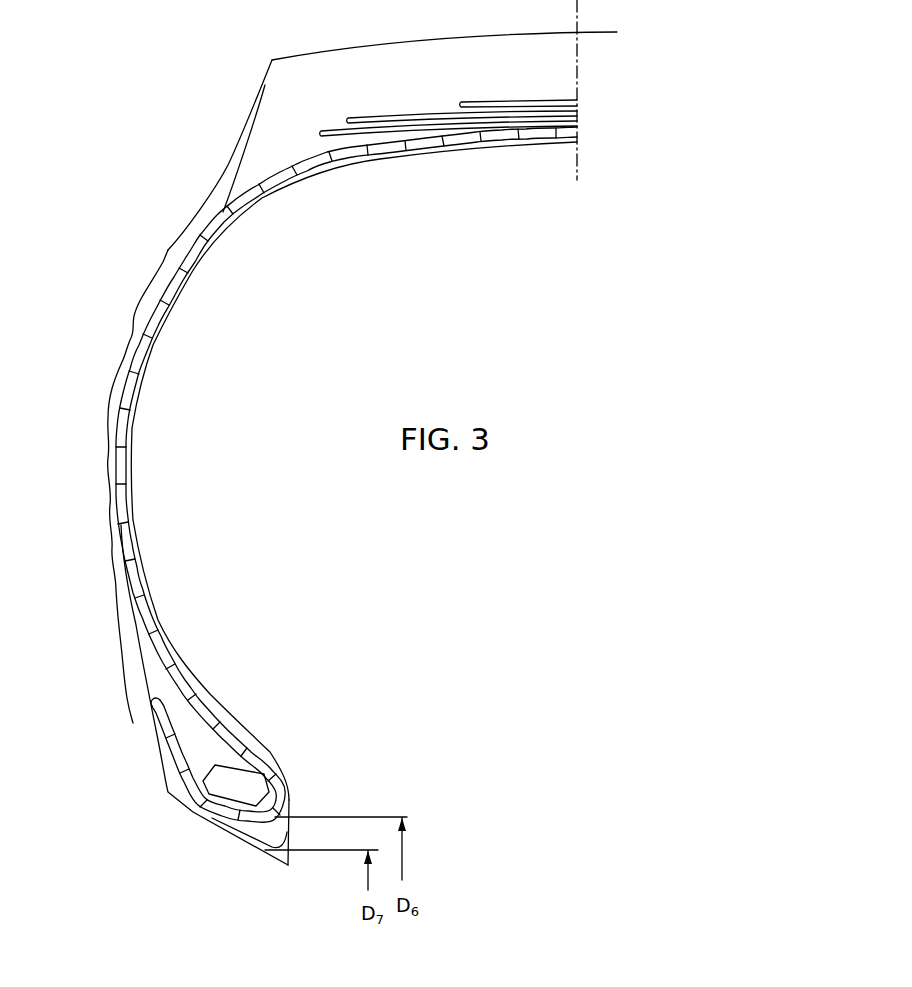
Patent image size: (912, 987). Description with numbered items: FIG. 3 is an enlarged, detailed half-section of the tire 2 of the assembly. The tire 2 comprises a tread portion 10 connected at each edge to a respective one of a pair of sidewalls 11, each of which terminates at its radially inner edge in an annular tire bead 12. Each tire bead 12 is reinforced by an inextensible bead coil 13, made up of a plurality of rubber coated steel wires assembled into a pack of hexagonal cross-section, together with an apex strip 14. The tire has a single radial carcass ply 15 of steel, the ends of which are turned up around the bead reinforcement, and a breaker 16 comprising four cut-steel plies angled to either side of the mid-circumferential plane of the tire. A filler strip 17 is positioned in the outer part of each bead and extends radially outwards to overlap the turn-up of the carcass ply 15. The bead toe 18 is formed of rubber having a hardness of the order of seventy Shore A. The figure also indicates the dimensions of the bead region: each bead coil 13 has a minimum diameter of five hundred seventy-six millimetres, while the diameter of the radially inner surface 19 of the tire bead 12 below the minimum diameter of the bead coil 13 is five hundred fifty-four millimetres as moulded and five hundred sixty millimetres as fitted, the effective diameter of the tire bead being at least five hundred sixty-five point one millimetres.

The tread portion 10 is at (362, 75).
The tire 2 is at (222, 165).
The breaker 16 is at (465, 100).
The radial carcass ply 15 is at (178, 279).
The filler strip 17 is at (155, 718).
The sidewall 11 is at (120, 345).
The tire bead 12 is at (175, 805).
The bead coil 13 is at (247, 787).
The apex strip 14 is at (213, 743).
The bead toe 18 is at (287, 866).
The radially inner surface 19 is at (217, 830).